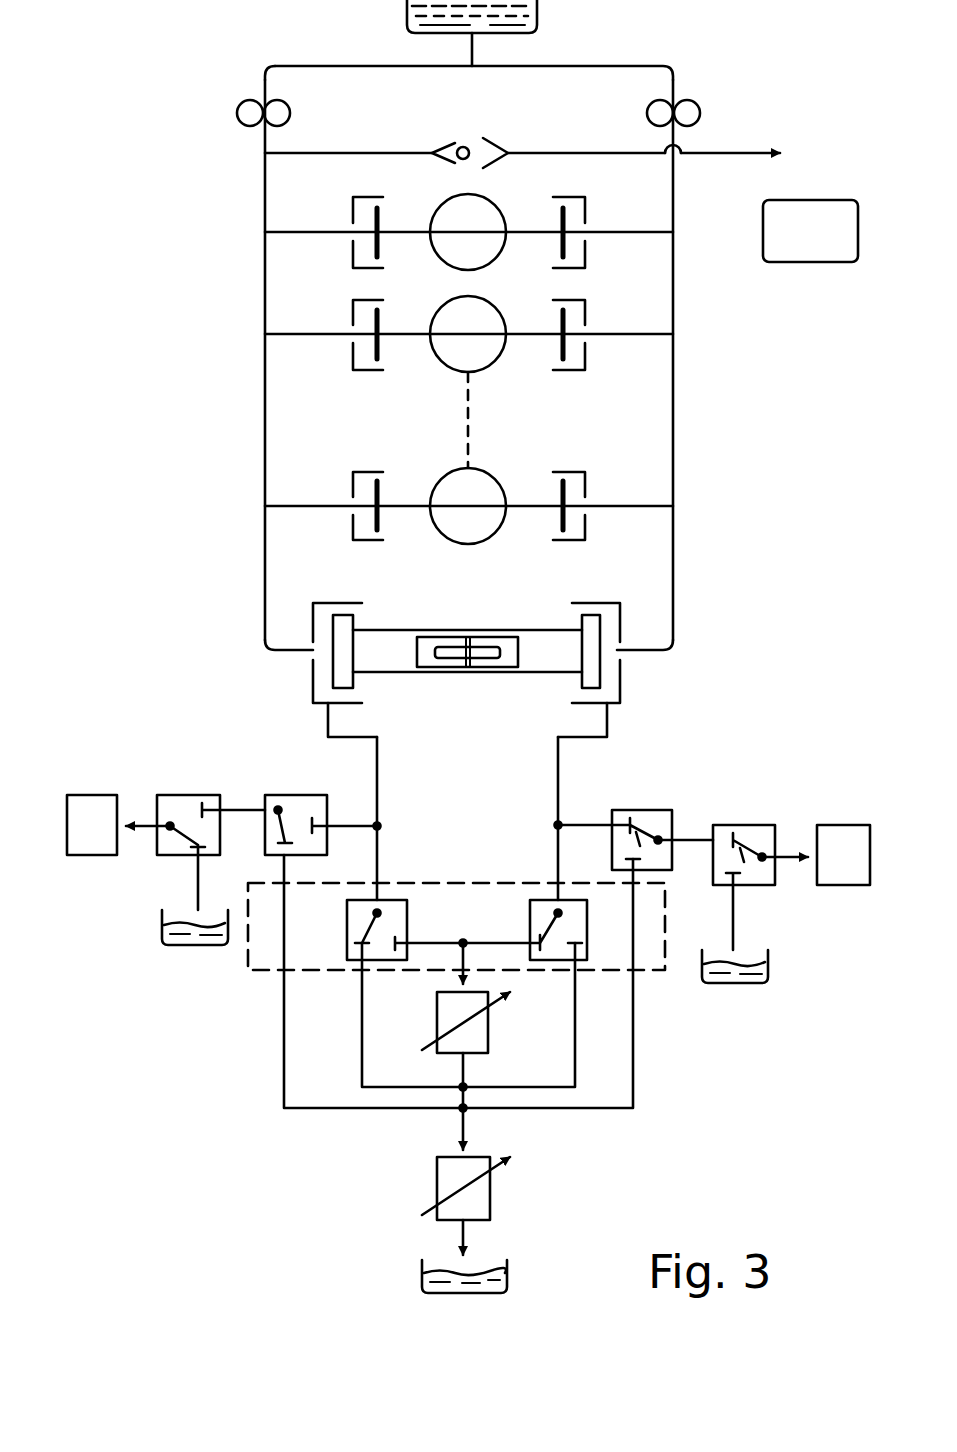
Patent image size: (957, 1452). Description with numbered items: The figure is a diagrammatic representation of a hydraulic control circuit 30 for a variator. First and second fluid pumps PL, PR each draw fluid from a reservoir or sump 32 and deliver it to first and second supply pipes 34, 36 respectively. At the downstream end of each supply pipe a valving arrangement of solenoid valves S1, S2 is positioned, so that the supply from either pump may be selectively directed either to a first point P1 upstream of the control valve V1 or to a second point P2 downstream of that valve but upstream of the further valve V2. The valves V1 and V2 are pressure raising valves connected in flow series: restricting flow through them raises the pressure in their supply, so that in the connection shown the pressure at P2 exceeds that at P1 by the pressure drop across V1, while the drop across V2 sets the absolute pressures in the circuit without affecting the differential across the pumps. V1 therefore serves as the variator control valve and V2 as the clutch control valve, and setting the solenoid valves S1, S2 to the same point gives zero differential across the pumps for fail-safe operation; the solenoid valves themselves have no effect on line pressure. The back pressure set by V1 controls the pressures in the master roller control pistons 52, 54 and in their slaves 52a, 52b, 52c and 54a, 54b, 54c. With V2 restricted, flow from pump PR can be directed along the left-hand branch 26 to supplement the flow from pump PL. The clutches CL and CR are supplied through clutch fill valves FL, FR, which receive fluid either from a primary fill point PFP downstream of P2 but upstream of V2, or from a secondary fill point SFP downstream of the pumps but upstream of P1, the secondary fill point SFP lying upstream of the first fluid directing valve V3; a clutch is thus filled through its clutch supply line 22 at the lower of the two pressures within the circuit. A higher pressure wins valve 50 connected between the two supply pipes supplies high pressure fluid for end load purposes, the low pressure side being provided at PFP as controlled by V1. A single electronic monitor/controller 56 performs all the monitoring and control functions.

The clutch supply line 22 is at (488, 252).
The left-hand branch 26 is at (362, 1057).
The control circuit 30 is at (722, 354).
The reservoir or sump 32 is at (537, 10).
The first supply pipe 34 is at (265, 400).
The second supply pipe 36 is at (673, 410).
The higher pressure wins valve 50 is at (506, 140).
The master roller control piston 52 is at (610, 621).
The slave roller control piston 52a is at (583, 484).
The slave roller control piston 52b is at (583, 314).
The slave roller control piston 52c is at (580, 215).
The master roller control piston 54 is at (323, 621).
The slave roller control piston 54a is at (353, 486).
The slave roller control piston 54b is at (353, 314).
The slave roller control piston 54c is at (353, 210).
The electronic monitor/controller 56 is at (824, 248).
The first fluid pump PL is at (237, 112).
The second fluid pump PR is at (700, 113).
The clutch fill valve FL is at (290, 795).
The clutch fill valve FR is at (672, 810).
The secondary fill point SFP is at (377, 826).
The solenoid valve S1 is at (347, 900).
The solenoid valve S2 is at (587, 900).
The first point P1 is at (463, 943).
The second point P2 is at (463, 1087).
The primary fill point PFP is at (463, 1108).
The control valve V1 is at (488, 1032).
The further valve V2 is at (490, 1190).
The first fluid directing valve V3 is at (655, 972).
The clutch CL is at (118, 825).
The clutch CR is at (816, 855).